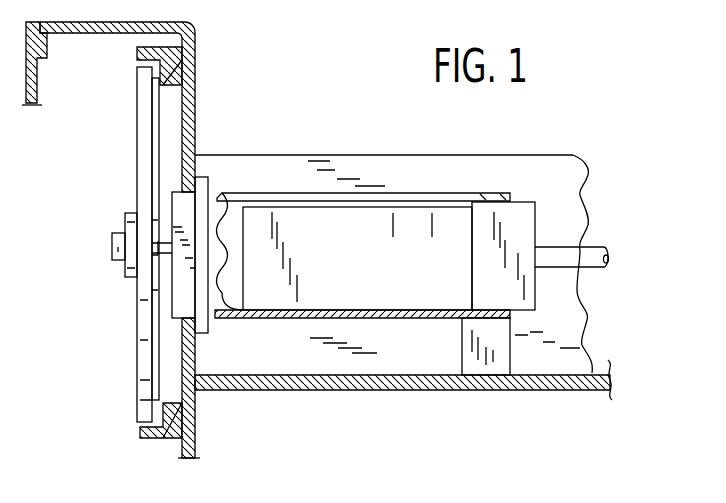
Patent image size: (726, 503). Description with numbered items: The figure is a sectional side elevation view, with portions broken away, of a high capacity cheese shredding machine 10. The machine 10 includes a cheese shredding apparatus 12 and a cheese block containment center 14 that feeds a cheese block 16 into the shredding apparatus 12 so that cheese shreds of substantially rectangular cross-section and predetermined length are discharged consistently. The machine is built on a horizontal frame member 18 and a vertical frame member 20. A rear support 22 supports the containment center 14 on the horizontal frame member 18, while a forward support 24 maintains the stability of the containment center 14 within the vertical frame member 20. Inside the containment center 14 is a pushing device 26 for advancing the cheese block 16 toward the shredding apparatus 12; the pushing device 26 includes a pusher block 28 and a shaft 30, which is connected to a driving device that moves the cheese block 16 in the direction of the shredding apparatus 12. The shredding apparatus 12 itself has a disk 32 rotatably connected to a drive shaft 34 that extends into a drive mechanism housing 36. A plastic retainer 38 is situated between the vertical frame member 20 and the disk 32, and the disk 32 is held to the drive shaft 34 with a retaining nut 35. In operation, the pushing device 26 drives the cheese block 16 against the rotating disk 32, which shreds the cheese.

The high capacity cheese shredding machine 10 is at (302, 108).
The cheese shredding apparatus 12 is at (121, 356).
The cheese block containment center 14 is at (422, 193).
The cheese block 16 is at (361, 263).
The horizontal frame member 18 is at (402, 391).
The vertical frame member 20 is at (188, 43).
The rear support 22 is at (480, 362).
The forward support 24 is at (208, 333).
The pushing device 26 is at (547, 285).
The pusher block 28 is at (520, 218).
The shaft 30 is at (588, 250).
The disk 32 is at (145, 304).
The drive shaft 34 is at (163, 245).
The retaining nut 35 is at (118, 255).
The drive mechanism housing 36 is at (552, 165).
The plastic retainer 38 is at (137, 52).